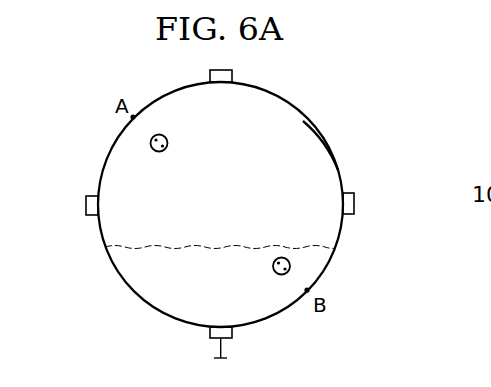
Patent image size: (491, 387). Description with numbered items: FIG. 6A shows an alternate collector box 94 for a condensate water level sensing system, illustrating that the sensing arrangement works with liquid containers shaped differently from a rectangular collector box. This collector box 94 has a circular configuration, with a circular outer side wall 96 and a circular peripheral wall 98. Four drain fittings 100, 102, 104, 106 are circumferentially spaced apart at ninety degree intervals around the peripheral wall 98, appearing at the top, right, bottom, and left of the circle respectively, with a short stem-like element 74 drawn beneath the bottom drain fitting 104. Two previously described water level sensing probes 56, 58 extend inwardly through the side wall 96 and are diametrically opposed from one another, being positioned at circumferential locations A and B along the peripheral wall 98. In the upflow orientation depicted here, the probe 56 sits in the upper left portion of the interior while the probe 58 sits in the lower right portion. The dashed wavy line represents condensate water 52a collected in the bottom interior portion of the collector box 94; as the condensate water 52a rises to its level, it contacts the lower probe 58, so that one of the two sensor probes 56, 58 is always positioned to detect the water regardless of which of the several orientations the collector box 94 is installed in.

The collector box 94 is at (285, 95).
The circular outer side wall 96 is at (232, 167).
The circular peripheral wall 98 is at (325, 139).
The drain fitting 100 is at (209, 72).
The drain fitting 102 is at (355, 201).
The drain fitting 104 is at (209, 332).
The drain fitting 106 is at (86, 204).
The outlet 74 is at (223, 347).
The water level sensing probe 56 is at (157, 152).
The water level sensing probe 58 is at (281, 257).
The condensate water 52a is at (208, 244).